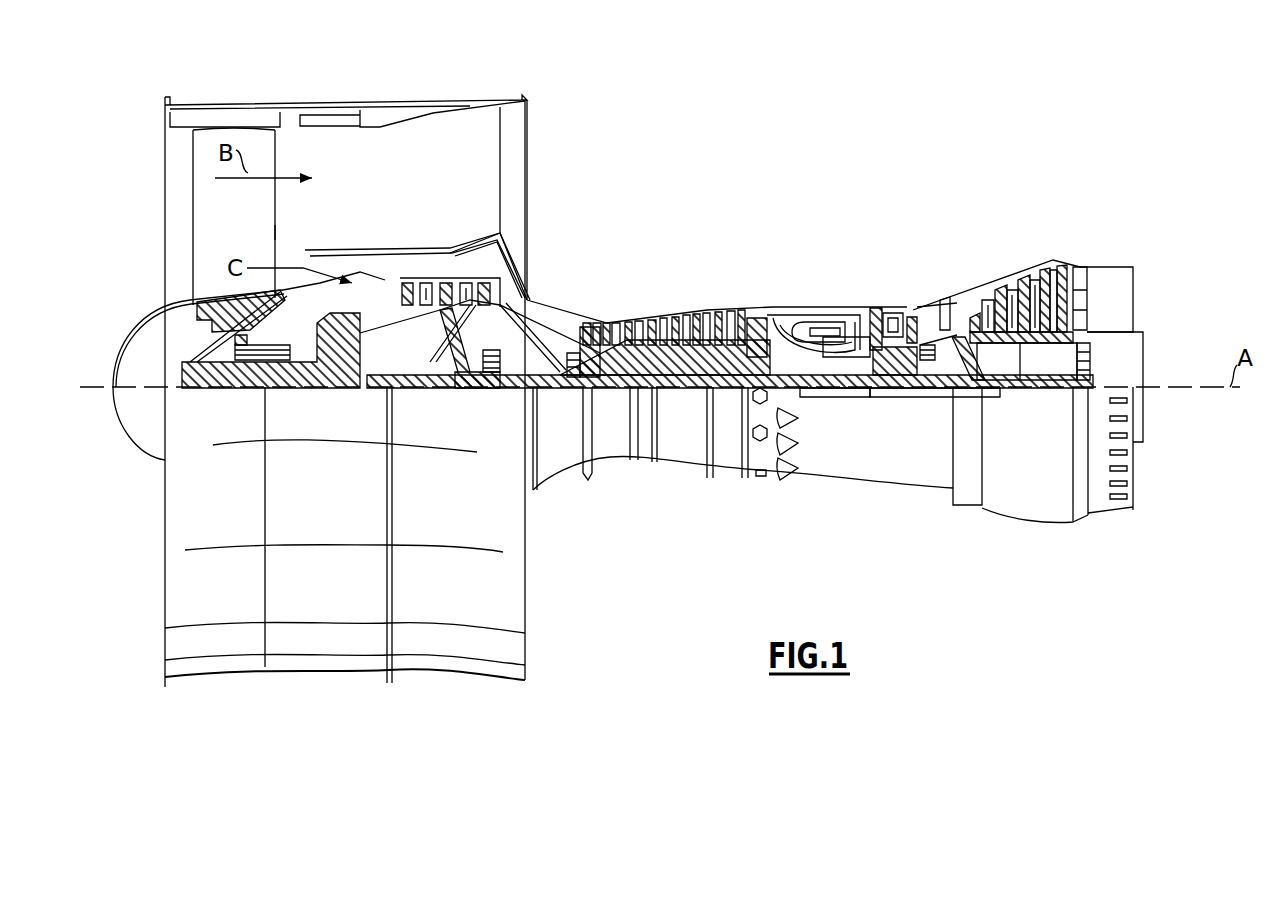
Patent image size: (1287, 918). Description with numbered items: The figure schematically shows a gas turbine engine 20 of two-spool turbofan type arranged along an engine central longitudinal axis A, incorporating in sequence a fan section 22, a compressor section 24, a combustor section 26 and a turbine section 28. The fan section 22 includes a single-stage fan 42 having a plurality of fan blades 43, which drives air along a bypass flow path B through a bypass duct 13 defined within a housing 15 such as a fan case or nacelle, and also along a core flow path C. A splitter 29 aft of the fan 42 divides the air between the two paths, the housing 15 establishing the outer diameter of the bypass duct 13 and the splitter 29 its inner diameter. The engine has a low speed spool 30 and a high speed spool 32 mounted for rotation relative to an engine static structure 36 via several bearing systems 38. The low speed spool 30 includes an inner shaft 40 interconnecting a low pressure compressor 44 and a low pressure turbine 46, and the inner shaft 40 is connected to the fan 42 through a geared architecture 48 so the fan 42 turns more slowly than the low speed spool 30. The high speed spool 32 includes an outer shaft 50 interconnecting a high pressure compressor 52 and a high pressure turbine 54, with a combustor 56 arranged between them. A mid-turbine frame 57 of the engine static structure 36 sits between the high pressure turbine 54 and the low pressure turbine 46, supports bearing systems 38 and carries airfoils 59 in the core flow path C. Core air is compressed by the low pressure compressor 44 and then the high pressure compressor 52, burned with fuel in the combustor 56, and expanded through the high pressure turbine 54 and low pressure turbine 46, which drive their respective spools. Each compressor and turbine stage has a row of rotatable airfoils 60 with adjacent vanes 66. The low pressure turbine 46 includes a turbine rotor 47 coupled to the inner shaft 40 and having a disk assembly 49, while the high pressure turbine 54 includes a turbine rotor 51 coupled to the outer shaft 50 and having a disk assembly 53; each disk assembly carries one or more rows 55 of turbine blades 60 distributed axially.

The bypass duct 13 is at (400, 133).
The housing 15 is at (345, 108).
The gas turbine engine 20 is at (799, 165).
The fan section 22 is at (278, 97).
The compressor section 24 is at (578, 295).
The combustor section 26 is at (800, 283).
The turbine section 28 is at (967, 250).
The splitter 29 is at (313, 253).
The low speed spool 30 is at (685, 393).
The high speed spool 32 is at (728, 337).
The engine static structure 36 is at (725, 473).
The bearing systems 38 is at (488, 378).
The inner shaft 40 is at (546, 389).
The fan 42 is at (248, 231).
The fan blades 43 is at (263, 233).
The low pressure compressor 44 is at (450, 293).
The low pressure turbine 46 is at (1028, 262).
The turbine rotor 47 is at (1075, 293).
The geared architecture 48 is at (355, 370).
The disk assembly 49 is at (1032, 352).
The outer shaft 50 is at (806, 390).
The turbine rotor 51 is at (868, 305).
The high pressure compressor 52 is at (665, 318).
The disk assembly 53 is at (870, 392).
The high pressure turbine 54 is at (875, 303).
The rows of turbine blades 55 is at (935, 292).
The combustor 56 is at (802, 328).
The mid-turbine frame 57 is at (932, 296).
The airfoils 59 is at (962, 362).
The rotatable airfoils 60 is at (410, 287).
The vanes 66 is at (430, 287).